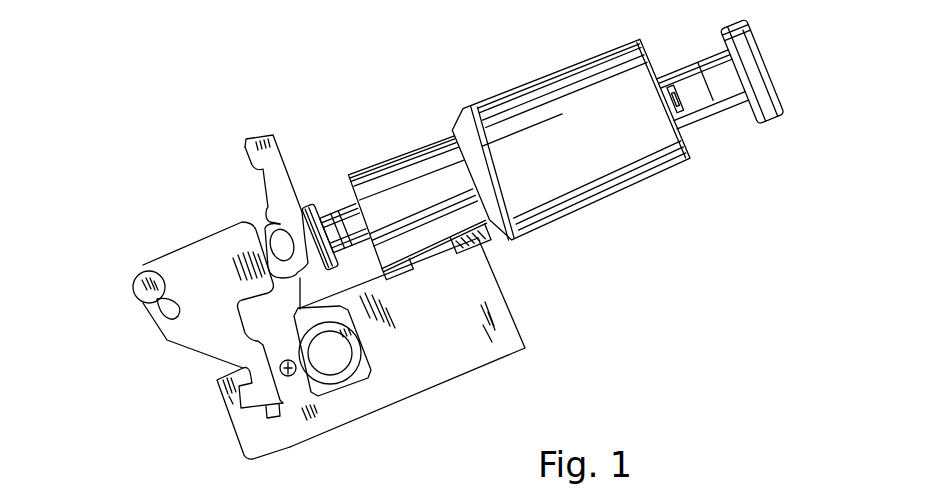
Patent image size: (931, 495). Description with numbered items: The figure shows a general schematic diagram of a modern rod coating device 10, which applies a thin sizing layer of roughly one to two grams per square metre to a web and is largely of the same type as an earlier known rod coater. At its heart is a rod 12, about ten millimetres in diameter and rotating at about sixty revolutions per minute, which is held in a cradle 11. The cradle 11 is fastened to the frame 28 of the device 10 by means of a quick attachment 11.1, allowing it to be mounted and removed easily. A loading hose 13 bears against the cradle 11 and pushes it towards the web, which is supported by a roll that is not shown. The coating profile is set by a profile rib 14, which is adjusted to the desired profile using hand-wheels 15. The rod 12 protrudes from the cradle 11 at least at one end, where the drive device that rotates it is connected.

The rod coating device 10 is at (191, 150).
The cradle 11 is at (217, 325).
The quick attachment 11.1 is at (336, 361).
The rod 12 is at (147, 291).
The loading hose 13 is at (262, 219).
The profile rib 14 is at (256, 174).
The hand-wheels 15 is at (771, 118).
The frame 28 is at (450, 367).